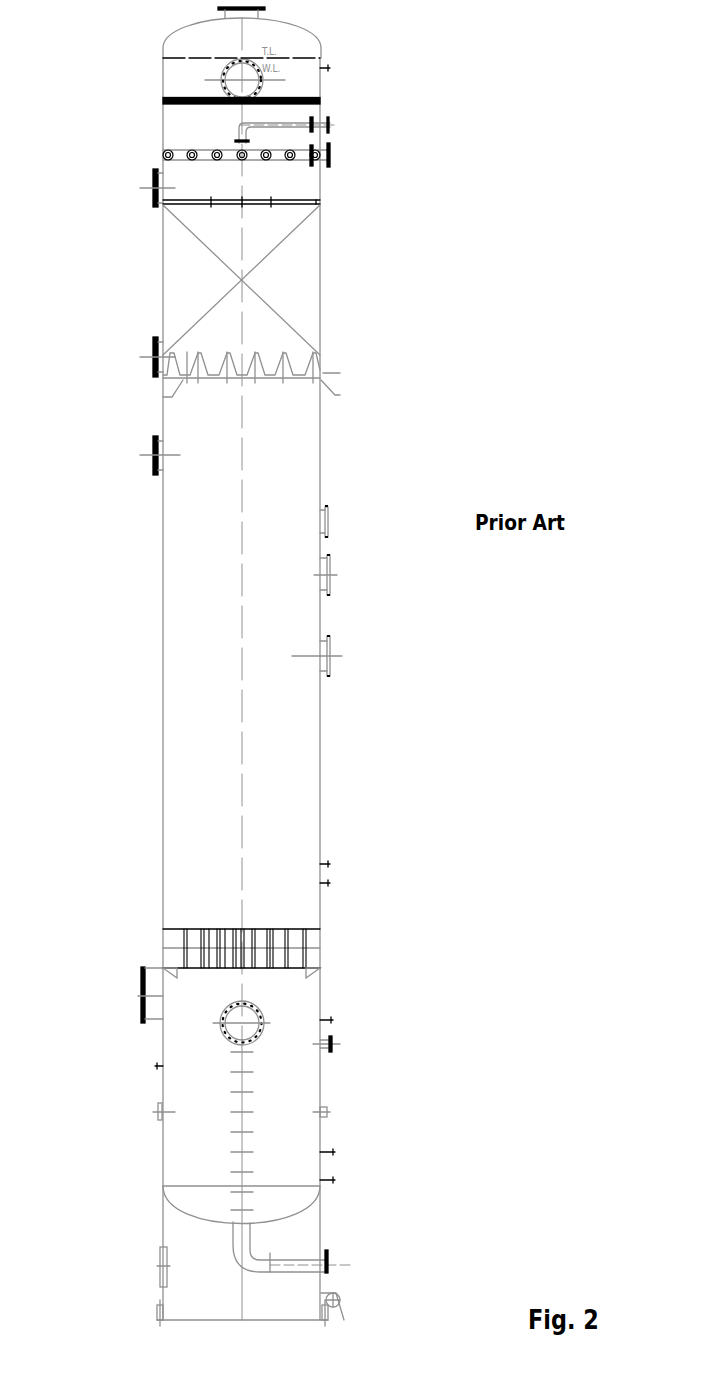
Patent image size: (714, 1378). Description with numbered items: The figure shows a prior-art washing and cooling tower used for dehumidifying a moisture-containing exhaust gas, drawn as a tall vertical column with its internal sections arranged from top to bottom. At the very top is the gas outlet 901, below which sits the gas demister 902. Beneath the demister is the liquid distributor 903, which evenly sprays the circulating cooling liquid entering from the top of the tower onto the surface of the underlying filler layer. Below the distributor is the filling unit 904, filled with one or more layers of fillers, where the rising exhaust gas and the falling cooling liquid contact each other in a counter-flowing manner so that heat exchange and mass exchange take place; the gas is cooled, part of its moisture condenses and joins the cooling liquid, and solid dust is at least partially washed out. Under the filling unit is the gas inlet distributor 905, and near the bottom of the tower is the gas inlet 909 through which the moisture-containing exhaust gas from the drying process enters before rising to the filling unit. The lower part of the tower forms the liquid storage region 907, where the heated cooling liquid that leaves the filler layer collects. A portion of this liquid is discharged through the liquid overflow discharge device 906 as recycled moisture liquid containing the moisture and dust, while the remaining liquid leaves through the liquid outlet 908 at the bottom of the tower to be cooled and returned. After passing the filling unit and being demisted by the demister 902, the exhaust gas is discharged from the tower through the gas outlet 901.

The gas outlet 901 is at (306, 17).
The gas demister 902 is at (321, 97).
The liquid distributor 903 is at (320, 160).
The filling unit 904 is at (310, 287).
The gas inlet distributor 905 is at (270, 957).
The liquid overflow discharge device 906 is at (355, 1004).
The liquid storage region 907 is at (275, 1126).
The liquid outlet 908 is at (315, 1219).
The gas inlet 909 is at (104, 967).